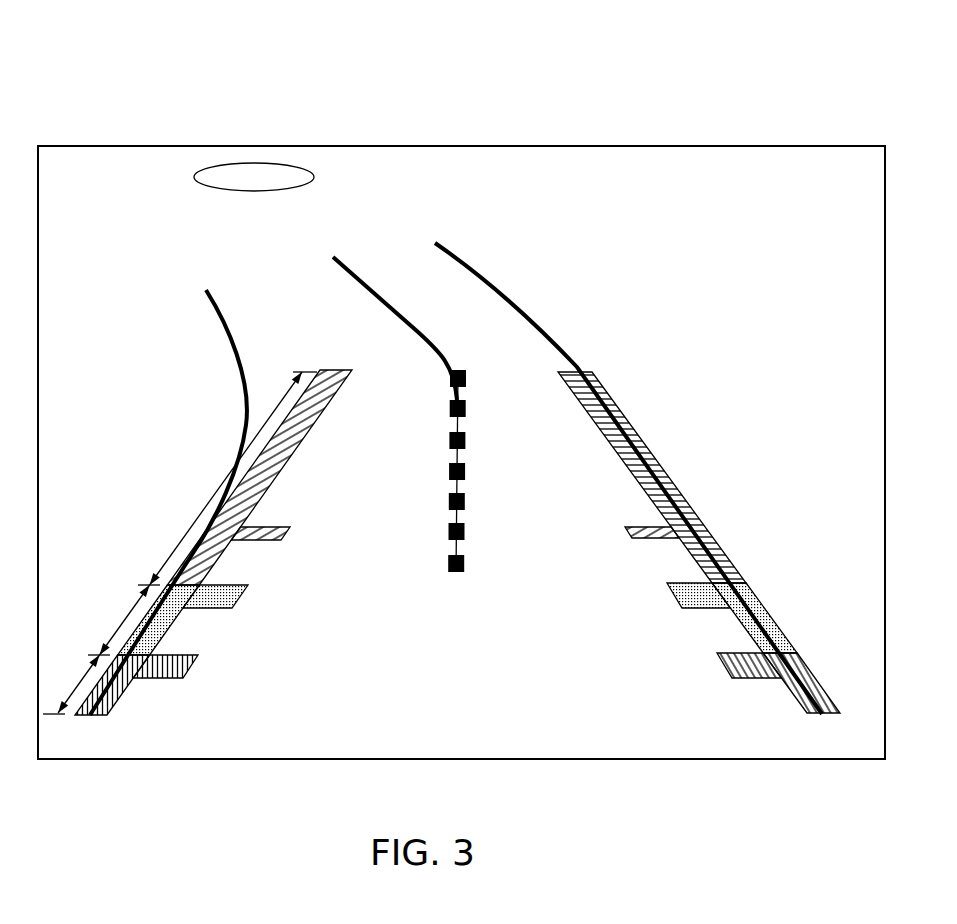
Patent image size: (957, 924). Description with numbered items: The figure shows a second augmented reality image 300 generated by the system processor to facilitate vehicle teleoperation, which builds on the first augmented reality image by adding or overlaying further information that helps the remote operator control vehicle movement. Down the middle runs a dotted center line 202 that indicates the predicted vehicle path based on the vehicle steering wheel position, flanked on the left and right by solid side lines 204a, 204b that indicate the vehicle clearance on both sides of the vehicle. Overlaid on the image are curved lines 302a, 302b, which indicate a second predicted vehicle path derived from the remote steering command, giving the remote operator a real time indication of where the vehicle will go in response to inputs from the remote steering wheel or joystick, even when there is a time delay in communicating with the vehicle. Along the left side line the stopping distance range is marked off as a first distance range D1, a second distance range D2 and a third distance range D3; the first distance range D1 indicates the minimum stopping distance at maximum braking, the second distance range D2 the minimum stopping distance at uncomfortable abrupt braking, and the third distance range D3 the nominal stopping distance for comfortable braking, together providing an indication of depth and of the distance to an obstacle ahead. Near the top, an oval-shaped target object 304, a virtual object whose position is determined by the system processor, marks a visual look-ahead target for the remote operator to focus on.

The second augmented reality image 300 is at (153, 59).
The target object 304 is at (253, 177).
The curved line 302a is at (220, 320).
The curved line 302b is at (477, 272).
The side line 204a is at (337, 370).
The side line 204b is at (577, 372).
The center line 202 is at (456, 372).
The first distance range D1 is at (75, 680).
The second distance range D2 is at (122, 620).
The third distance range D3 is at (218, 488).